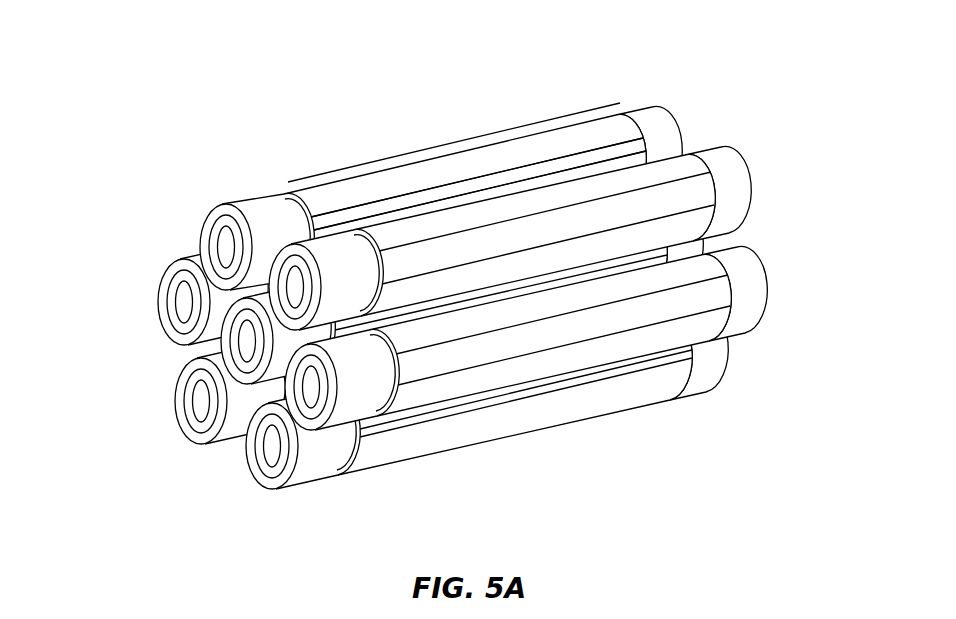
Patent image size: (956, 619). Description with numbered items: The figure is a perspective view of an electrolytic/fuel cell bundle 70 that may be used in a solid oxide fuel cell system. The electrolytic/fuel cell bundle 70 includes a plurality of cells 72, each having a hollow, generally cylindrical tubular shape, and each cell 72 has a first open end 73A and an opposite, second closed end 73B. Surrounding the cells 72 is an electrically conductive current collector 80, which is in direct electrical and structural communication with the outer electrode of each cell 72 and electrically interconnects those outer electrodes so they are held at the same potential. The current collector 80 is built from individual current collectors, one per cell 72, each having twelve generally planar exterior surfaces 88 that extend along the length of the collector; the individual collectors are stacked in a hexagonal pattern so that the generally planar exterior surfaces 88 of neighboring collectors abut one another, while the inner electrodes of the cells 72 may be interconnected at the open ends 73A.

The electrolytic/fuel cell bundle 70 is at (468, 289).
The cell 72 is at (222, 230).
The first open end 73A is at (157, 328).
The second closed end 73B is at (678, 120).
The current collector 80 is at (548, 115).
The generally planar exterior surfaces 88 is at (465, 148).